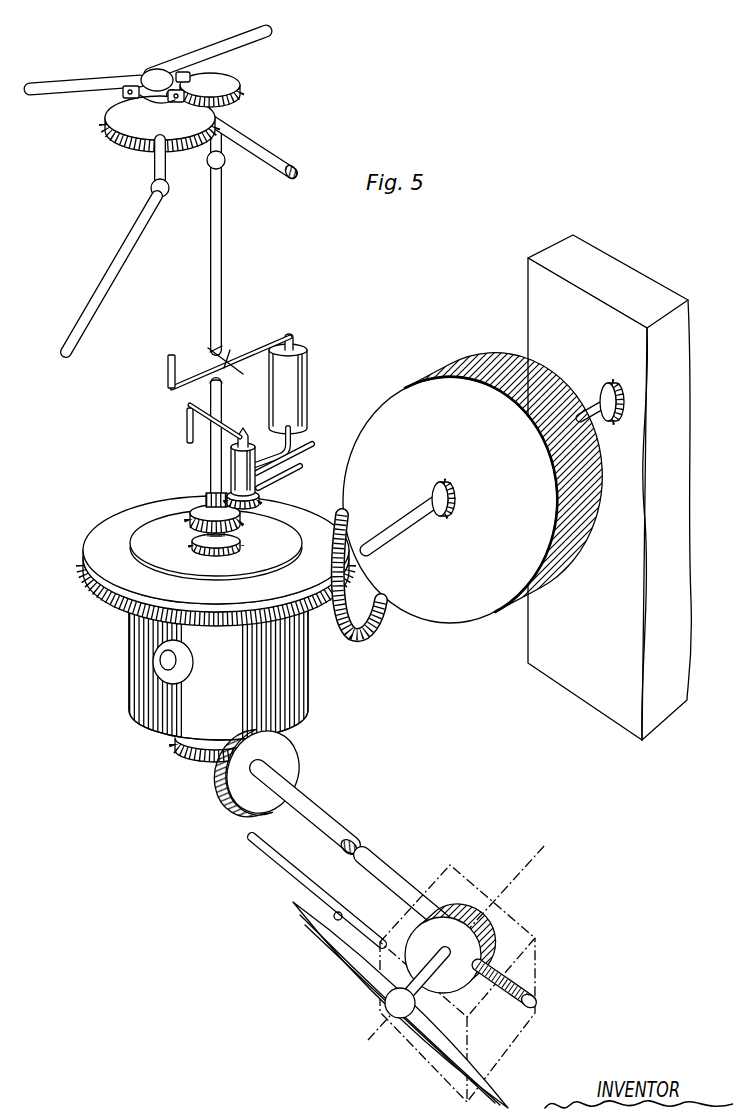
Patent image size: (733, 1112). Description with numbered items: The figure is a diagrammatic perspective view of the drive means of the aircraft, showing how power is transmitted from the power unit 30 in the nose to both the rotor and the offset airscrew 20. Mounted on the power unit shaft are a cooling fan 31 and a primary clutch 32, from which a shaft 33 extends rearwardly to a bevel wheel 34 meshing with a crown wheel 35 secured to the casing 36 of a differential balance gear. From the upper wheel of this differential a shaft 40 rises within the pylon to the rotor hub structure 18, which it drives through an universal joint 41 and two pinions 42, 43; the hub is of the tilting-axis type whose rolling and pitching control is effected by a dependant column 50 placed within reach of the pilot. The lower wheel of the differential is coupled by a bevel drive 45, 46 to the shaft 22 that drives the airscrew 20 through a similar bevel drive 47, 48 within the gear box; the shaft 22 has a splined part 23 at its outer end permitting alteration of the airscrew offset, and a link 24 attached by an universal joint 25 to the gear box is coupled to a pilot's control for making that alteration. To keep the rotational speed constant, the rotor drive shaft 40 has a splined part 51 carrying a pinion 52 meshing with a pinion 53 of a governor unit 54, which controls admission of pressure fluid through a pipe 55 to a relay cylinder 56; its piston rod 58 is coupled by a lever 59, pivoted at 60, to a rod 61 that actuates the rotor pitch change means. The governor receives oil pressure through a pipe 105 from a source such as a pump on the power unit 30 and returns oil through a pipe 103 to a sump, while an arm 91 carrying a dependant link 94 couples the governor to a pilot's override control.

The hub 18 is at (156, 78).
The airscrew 20 is at (355, 973).
The shaft 22 is at (337, 820).
The splined part 23 is at (507, 983).
The link 24 is at (287, 873).
The universal joint 25 is at (335, 918).
The power unit 30 is at (535, 287).
The cooling fan 31 is at (570, 542).
The primary clutch 32 is at (592, 438).
The shaft 33 is at (410, 522).
The bevel wheel 34 is at (353, 633).
The crown wheel 35 is at (107, 617).
The casing 36 is at (135, 673).
The shaft 40 is at (217, 267).
The universal joint 41 is at (218, 157).
The pinion 42 is at (238, 95).
The pinion 43 is at (147, 128).
The bevel drive 45 is at (207, 743).
The bevel drive 46 is at (290, 757).
The bevel drive 47 is at (473, 900).
The bevel drive 48 is at (460, 980).
The dependant column 50 is at (102, 292).
The splined part 51 is at (203, 497).
The pinion 52 is at (193, 525).
The pinion 53 is at (252, 503).
The governor unit 54 is at (235, 462).
The pipe 55 is at (306, 447).
The relay cylinder 56 is at (302, 387).
The rod 58 is at (292, 340).
The lever 59 is at (200, 370).
The pivot 60 is at (230, 360).
The rod 61 is at (168, 367).
The arm 91 is at (188, 407).
The dependant link 94 is at (187, 433).
The pipe 103 is at (300, 472).
The pipe 105 is at (300, 430).